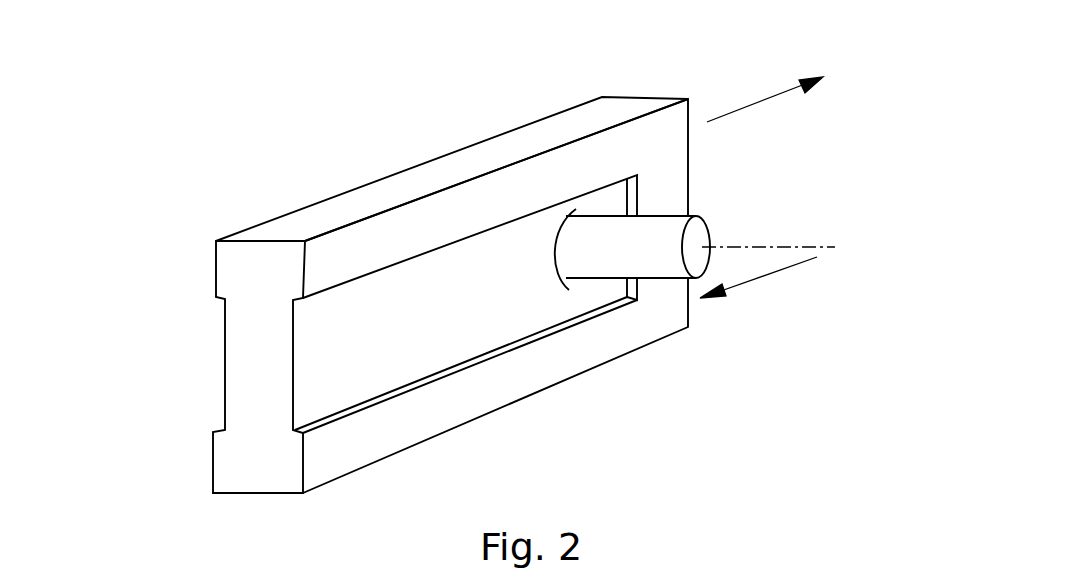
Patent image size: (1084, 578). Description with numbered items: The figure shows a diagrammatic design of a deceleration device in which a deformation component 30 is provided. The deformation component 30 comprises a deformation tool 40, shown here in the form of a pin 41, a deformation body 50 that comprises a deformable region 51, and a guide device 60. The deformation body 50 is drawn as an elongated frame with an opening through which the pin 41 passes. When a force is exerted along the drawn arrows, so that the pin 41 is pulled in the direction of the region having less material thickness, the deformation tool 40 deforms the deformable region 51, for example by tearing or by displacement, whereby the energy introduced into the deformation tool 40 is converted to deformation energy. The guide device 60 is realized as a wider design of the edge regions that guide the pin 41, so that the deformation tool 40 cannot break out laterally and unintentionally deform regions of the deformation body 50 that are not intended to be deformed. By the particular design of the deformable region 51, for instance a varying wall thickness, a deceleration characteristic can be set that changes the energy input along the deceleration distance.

The deformation component 30 is at (412, 253).
The deformation body 50 is at (348, 203).
The deformable region 51 is at (315, 362).
The guide device 60 is at (397, 385).
The deformation tool 40 is at (716, 217).
The pin 41 is at (697, 233).